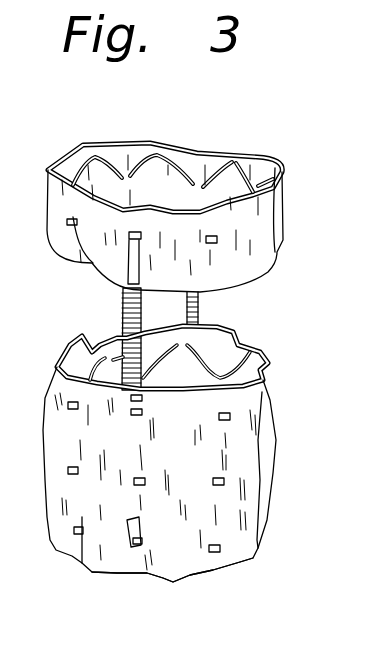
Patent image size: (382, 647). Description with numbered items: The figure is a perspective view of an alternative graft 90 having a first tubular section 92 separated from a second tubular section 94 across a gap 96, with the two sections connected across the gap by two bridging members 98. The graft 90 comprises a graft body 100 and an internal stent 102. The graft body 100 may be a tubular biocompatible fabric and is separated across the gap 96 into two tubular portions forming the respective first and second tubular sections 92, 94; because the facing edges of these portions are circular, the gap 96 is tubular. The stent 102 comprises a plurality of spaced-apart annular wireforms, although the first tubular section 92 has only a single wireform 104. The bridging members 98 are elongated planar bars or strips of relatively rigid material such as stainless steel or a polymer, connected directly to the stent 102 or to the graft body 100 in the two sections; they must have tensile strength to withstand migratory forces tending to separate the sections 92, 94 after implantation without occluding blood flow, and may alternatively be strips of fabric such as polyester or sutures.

The graft 90 is at (260, 148).
The first tubular section 92 is at (165, 188).
The second tubular section 94 is at (197, 480).
The gap 96 is at (109, 339).
The bridging members 98 is at (121, 322).
The graft body 100 is at (228, 557).
The internal stent 102 is at (184, 162).
The wireform 104 is at (115, 161).